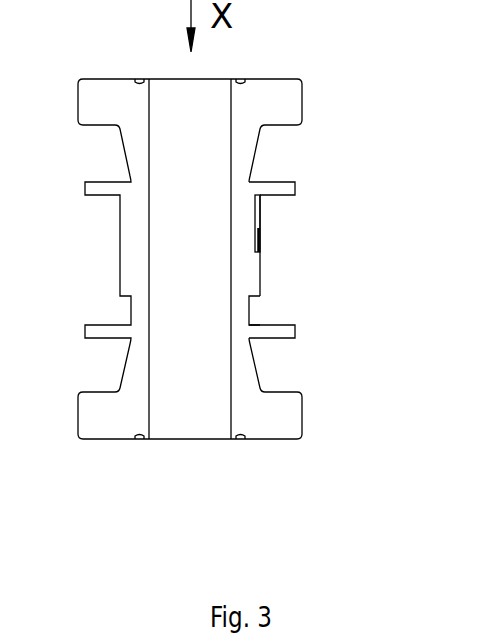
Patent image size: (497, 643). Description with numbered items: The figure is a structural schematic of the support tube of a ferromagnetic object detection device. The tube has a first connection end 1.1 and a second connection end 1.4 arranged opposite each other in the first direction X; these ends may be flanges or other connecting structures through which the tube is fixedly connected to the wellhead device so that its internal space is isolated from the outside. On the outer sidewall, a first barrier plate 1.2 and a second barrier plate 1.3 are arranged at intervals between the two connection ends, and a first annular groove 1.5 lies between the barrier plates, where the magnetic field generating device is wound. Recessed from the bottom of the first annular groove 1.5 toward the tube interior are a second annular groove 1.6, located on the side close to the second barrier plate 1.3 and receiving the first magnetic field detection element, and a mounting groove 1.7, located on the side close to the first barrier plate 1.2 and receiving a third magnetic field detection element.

The first connection end 1.1 is at (312, 91).
The first barrier plate 1.2 is at (306, 176).
The second barrier plate 1.3 is at (302, 349).
The second connection end 1.4 is at (261, 414).
The first annular groove 1.5 is at (290, 250).
The second annular groove 1.6 is at (270, 311).
The mounting groove 1.7 is at (274, 214).